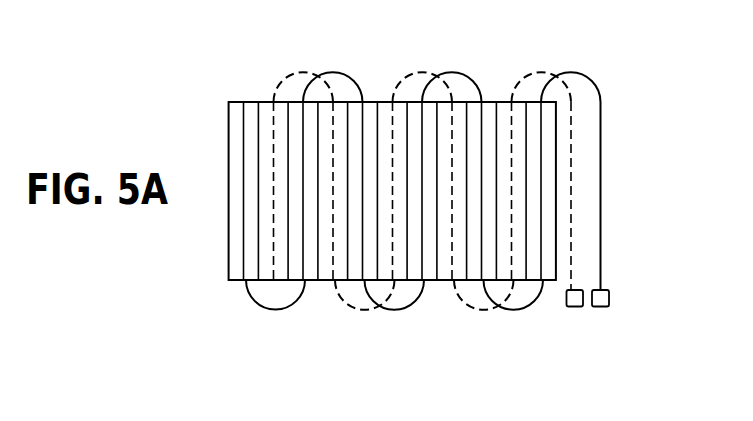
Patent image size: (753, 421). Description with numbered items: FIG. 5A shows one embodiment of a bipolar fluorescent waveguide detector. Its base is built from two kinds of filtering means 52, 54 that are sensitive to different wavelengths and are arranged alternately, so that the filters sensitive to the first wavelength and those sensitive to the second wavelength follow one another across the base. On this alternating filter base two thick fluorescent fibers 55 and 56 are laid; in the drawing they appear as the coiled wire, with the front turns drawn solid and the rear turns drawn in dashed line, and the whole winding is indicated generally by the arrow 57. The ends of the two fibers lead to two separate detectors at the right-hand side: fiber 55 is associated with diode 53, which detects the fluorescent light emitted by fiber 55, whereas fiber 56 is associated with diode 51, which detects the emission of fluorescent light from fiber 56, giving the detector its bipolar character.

The diode 51 is at (604, 307).
The filtering means 52 is at (233, 261).
The diode 53 is at (575, 307).
The filtering means 54 is at (268, 112).
The fluorescent fiber 55 is at (577, 210).
The fluorescent fiber 56 is at (602, 113).
The coil winding 57 is at (471, 71).